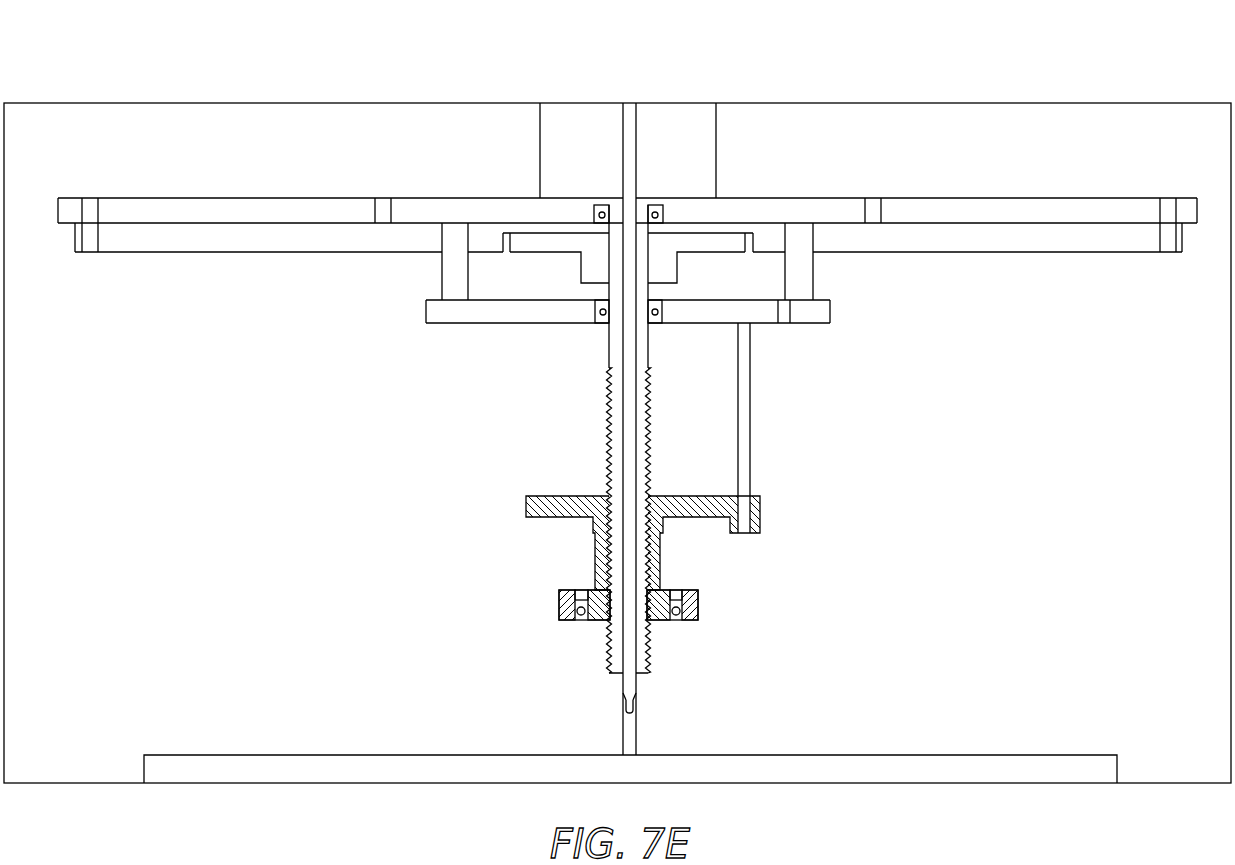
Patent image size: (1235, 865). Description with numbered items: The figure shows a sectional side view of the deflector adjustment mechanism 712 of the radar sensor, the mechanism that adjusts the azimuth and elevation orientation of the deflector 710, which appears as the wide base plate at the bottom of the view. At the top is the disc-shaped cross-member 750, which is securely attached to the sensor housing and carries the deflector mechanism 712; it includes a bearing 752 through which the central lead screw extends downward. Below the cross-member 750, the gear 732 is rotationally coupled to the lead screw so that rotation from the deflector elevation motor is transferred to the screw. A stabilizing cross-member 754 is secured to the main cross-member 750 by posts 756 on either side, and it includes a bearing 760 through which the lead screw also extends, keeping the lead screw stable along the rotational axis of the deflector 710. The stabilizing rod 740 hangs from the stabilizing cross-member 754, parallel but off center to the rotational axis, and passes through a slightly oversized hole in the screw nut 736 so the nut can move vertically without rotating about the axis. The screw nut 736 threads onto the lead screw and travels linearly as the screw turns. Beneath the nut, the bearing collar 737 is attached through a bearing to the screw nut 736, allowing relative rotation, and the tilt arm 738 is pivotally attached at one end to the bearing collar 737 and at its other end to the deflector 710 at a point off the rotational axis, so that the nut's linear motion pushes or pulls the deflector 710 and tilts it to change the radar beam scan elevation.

The deflector adjustment mechanism 712 is at (875, 68).
The deflector 710 is at (953, 755).
The cross-member 750 is at (243, 253).
The bearing 752 is at (594, 215).
The posts 756 is at (442, 281).
The gear 732 is at (700, 258).
The stabilizing cross-member 754 is at (810, 324).
The bearing 760 is at (652, 323).
The stabilizing rod 740 is at (750, 447).
The screw nut 736 is at (560, 496).
The tilt arm 738 is at (580, 620).
The bearing collar 737 is at (698, 600).